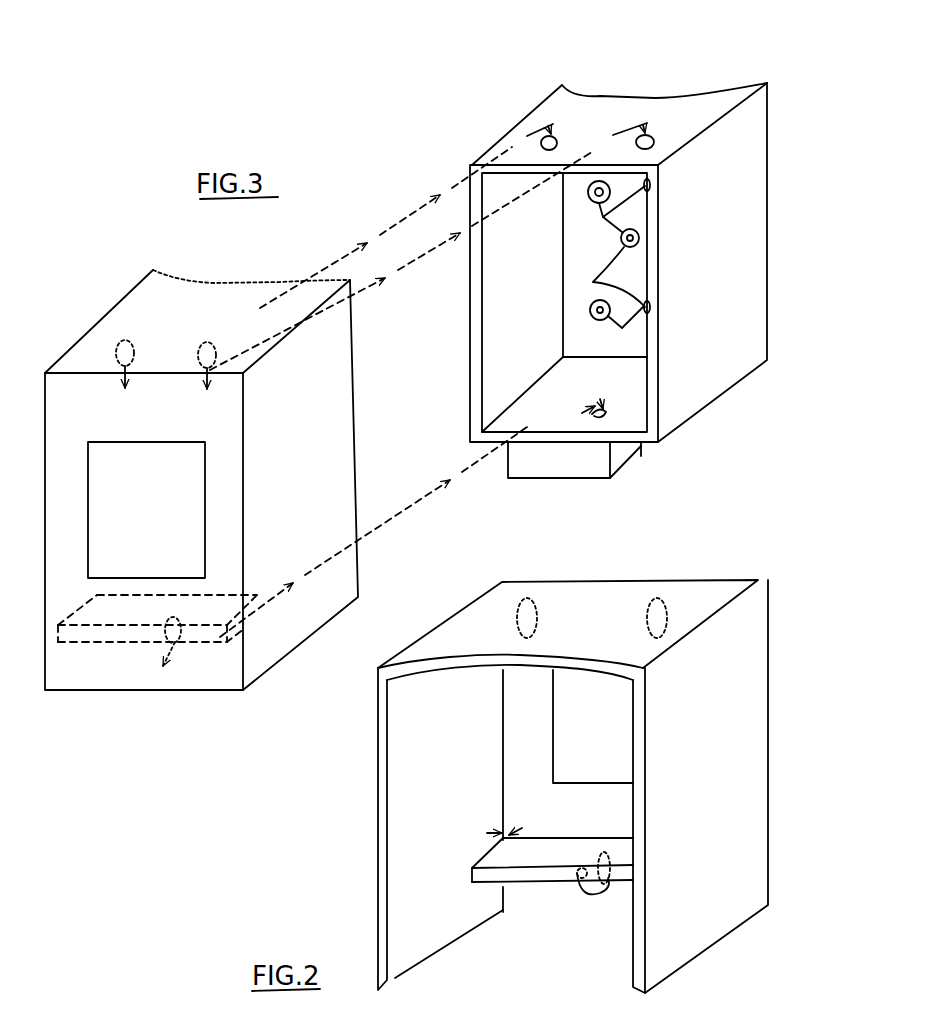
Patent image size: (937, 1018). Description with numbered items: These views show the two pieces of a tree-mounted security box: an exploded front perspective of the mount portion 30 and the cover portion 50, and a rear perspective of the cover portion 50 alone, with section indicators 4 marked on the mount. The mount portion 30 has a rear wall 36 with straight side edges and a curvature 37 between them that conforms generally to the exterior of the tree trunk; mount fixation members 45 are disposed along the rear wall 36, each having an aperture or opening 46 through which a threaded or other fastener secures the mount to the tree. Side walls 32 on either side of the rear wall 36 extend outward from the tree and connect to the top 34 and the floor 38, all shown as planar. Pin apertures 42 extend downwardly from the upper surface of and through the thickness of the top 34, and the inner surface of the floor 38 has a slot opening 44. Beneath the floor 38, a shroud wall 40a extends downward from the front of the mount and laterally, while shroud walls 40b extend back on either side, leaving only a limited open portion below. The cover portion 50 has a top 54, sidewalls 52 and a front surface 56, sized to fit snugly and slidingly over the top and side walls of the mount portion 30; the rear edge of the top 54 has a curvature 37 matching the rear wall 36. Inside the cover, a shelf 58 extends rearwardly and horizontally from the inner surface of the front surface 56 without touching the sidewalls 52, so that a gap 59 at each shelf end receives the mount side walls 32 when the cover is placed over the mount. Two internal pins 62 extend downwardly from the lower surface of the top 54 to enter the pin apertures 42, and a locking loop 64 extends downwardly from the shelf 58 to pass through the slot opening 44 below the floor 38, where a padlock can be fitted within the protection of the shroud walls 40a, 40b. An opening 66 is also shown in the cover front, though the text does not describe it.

In FIG. 3, the mount portion 30 is at (470, 96).
In FIG. 3, the side walls 32 is at (750, 262).
In FIG. 3, the top 34 is at (682, 113).
In FIG. 3, the rear wall 36 is at (600, 270).
In FIG. 3, the curvature 37 is at (618, 93).
In FIG. 3, the floor 38 is at (626, 389).
In FIG. 3, the shroud wall 40a is at (570, 467).
In FIG. 3, the shroud walls 40b is at (627, 452).
In FIG. 3, the pin apertures 42 is at (553, 137).
In FIG. 3, the slot opening 44 is at (606, 411).
In FIG. 3, the mount fixation members 45 is at (608, 253).
In FIG. 3, the openings 46 is at (607, 266).
In FIG. 3, the section line 4- 4 is at (480, 127).
In FIG. 3, the cover portion 50 is at (385, 565).
In FIG. 2, the cover portion 50 is at (297, 840).
In FIG. 3, the sidewalls 52 is at (322, 478).
In FIG. 2, the sidewalls 52 is at (450, 769).
In FIG. 3, the top 54 is at (192, 290).
In FIG. 2, the top 54 is at (598, 616).
In FIG. 3, the front surface 56 is at (96, 428).
In FIG. 3, the shelf 58 is at (113, 627).
In FIG. 2, the shelf 58 is at (545, 853).
In FIG. 3, the gap 59 is at (52, 632).
In FIG. 2, the gap 59 is at (507, 833).
In FIG. 3, the internal pins 62 is at (204, 344).
In FIG. 2, the internal pins 62 is at (516, 628).
In FIG. 3, the locking loop 64 is at (150, 693).
In FIG. 2, the locking loop 64 is at (600, 890).
In FIG. 3, the window opening 66 is at (93, 508).
In FIG. 2, the window opening 66 is at (557, 726).